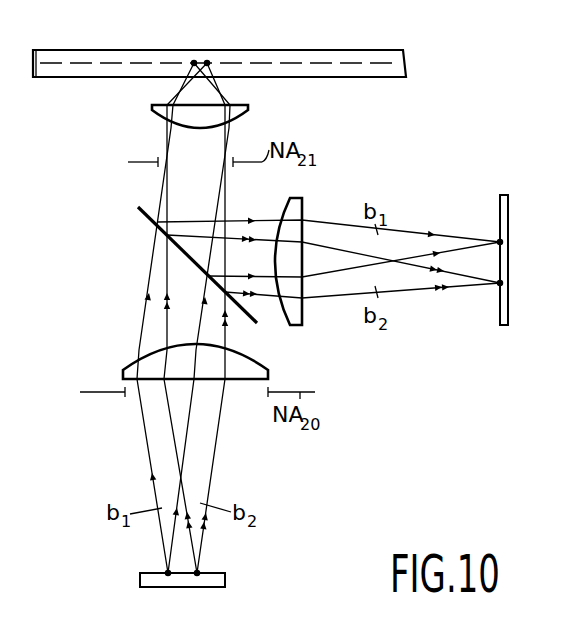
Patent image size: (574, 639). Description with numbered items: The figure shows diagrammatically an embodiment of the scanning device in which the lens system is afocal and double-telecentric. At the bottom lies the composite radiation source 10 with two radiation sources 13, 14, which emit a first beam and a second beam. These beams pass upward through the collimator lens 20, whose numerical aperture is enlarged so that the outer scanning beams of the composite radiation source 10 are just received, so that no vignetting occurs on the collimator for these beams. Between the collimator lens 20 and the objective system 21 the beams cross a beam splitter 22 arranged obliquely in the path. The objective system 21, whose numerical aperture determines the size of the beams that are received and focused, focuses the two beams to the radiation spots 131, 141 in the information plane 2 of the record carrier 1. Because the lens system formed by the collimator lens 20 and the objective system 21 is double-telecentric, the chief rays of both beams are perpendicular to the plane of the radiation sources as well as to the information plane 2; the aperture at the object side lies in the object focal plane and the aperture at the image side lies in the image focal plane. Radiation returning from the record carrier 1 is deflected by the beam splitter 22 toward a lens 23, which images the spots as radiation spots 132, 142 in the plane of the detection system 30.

The record carrier 1 is at (326, 33).
The information plane 2 is at (357, 60).
The composite radiation source 10 is at (226, 578).
The radiation source 13 is at (167, 572).
The radiation source 14 is at (198, 572).
The collimator lens 20 is at (268, 366).
The objective system 21 is at (249, 110).
The beam splitter 22 is at (184, 258).
The lens 23 is at (290, 200).
The detection system 30 is at (509, 322).
The radiation spot 131 is at (207, 63).
The radiation spot 141 is at (194, 63).
The radiation spot 132 is at (500, 242).
The radiation spot 142 is at (500, 283).